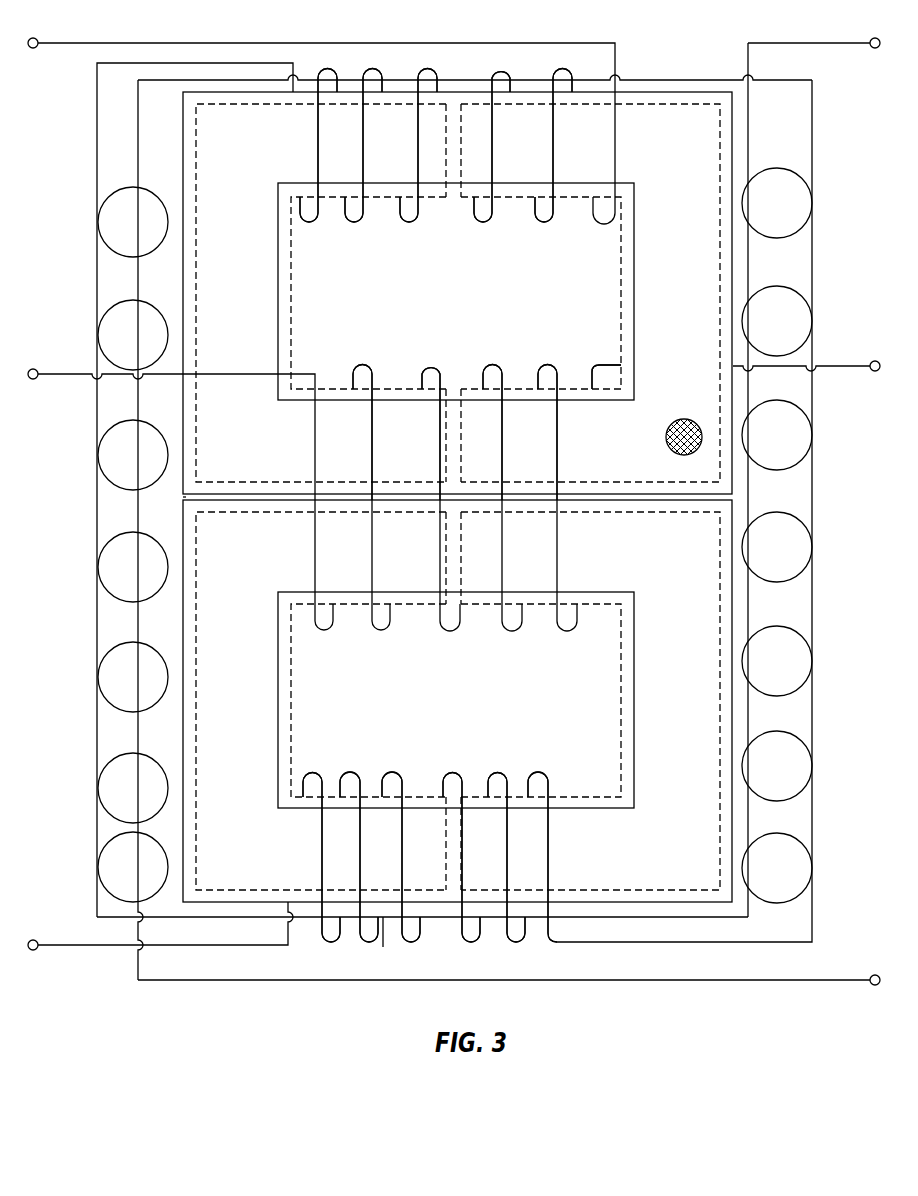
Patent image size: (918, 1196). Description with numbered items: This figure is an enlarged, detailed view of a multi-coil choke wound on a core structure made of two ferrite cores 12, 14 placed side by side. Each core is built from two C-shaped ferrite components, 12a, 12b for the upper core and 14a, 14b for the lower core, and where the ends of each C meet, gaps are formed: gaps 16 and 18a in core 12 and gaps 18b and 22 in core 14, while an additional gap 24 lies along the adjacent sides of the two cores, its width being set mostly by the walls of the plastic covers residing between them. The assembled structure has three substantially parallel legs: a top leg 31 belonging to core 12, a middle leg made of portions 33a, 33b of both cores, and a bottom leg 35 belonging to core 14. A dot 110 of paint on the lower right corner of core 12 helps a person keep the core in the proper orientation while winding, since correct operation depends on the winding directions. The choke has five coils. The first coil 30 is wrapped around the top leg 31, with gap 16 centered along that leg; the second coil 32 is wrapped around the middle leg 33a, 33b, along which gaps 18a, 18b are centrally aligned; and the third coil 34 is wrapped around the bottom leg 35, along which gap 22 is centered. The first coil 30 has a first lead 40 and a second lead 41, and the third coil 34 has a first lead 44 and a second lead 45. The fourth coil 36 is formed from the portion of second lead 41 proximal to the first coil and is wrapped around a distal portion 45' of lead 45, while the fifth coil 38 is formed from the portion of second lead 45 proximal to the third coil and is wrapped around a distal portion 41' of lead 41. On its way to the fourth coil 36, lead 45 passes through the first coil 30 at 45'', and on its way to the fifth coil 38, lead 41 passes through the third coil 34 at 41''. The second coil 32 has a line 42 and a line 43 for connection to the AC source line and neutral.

The core 12 is at (643, 118).
The C-shaped ferrite core component 12a is at (291, 292).
The C-shaped ferrite core component 12b is at (616, 298).
The core 14 is at (641, 867).
The C-shaped ferrite core component 14a is at (290, 697).
The C-shaped ferrite core component 14b is at (621, 773).
The gap 16 is at (452, 197).
The gap 18a is at (452, 389).
The gap 18b is at (453, 600).
The gap 22 is at (453, 880).
The gap 24 is at (187, 497).
The first coil 30 is at (428, 67).
The top leg 31 is at (283, 156).
The second coil 32 is at (429, 365).
The middle leg portion 33a is at (293, 459).
The middle leg portion 33b is at (293, 561).
The third coil 34 is at (452, 772).
The bottom leg 35 is at (287, 871).
The fourth coil 36 is at (97, 568).
The fifth coil 38 is at (811, 548).
The first lead 40 is at (338, 43).
The second lead 41 is at (402, 490).
The distal portion of second lead 41' is at (770, 480).
The lead passage through third coil 41'' is at (363, 946).
The line 42 is at (848, 366).
The line 43 is at (58, 374).
The first lead 44 is at (82, 945).
The second lead 45 is at (509, 532).
The distal portion of second lead 45' is at (157, 530).
The lead passage through first coil 45'' is at (475, 58).
The dot 110 is at (685, 419).